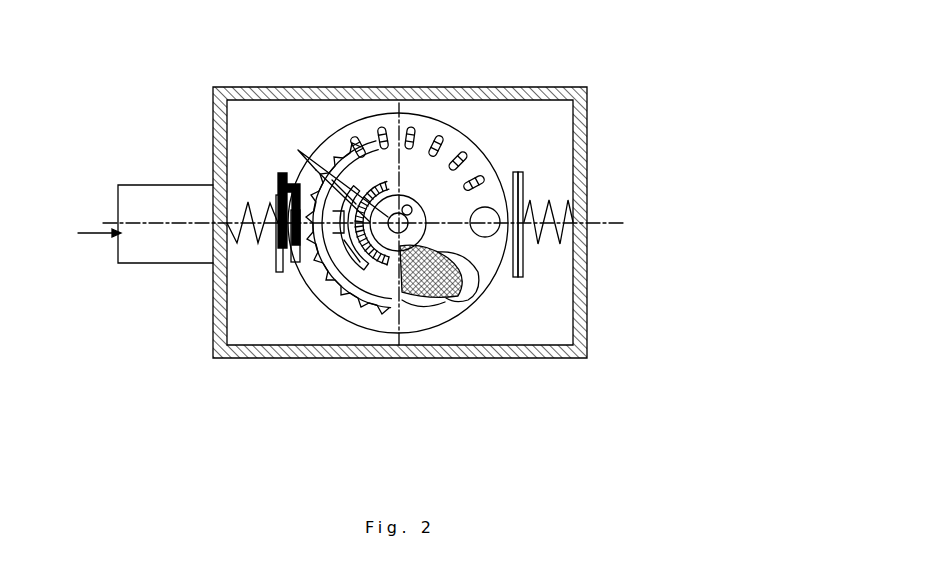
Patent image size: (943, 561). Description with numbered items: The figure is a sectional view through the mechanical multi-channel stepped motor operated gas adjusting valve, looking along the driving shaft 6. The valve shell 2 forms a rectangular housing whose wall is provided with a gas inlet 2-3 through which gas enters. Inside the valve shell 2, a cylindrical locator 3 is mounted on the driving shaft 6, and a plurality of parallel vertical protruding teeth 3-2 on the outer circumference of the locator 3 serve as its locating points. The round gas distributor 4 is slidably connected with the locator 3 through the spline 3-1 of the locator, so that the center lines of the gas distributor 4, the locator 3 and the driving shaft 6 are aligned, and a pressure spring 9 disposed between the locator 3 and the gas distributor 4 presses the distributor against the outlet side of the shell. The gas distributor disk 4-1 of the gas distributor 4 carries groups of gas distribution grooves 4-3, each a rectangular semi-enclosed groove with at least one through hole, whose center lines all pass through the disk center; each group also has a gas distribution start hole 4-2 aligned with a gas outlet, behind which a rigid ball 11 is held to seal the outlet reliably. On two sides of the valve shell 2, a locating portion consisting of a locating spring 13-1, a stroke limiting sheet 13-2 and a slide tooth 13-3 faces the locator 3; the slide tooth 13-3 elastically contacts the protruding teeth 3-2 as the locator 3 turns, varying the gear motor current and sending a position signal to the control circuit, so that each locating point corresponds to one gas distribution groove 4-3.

The valve shell 2 is at (332, 87).
The gas inlet 2-3 is at (122, 262).
The locator 3 is at (316, 160).
The spline of the locator 3-1 is at (298, 150).
The protruding teeth 3-2 is at (325, 252).
The gas distributor 4 is at (446, 305).
The gas distributor disk 4-1 is at (372, 120).
The gas distribution start hole 4-2 is at (575, 319).
The gas distribution grooves 4-3 is at (420, 122).
The driving shaft 6 is at (392, 232).
The pressure spring 9 is at (356, 272).
The rigid ball 11 is at (477, 238).
The locating spring 13-1 is at (268, 216).
The stroke limiting sheet 13-2 is at (290, 257).
The slide tooth 13-3 is at (281, 190).